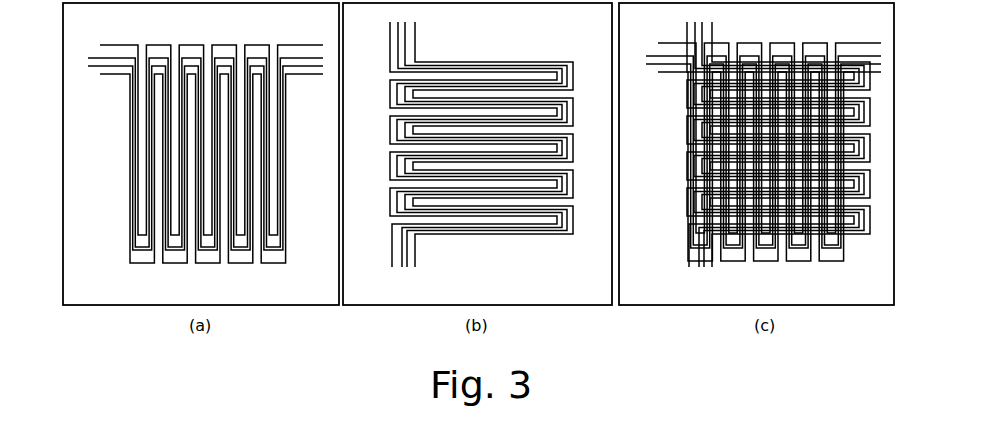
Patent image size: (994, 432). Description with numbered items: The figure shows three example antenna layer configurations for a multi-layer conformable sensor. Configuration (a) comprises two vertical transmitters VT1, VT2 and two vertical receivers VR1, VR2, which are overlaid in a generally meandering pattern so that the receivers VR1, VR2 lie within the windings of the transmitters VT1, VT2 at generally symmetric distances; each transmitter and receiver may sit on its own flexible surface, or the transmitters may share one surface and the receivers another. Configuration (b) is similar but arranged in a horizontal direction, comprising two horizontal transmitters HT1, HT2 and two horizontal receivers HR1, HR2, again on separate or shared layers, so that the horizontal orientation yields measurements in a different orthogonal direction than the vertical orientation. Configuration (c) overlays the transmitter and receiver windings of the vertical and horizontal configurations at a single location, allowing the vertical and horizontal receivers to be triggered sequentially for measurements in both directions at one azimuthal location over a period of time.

The vertical transmitter VT2 is at (478, 134).
The vertical receiver VR2 is at (473, 147).
The vertical receiver VR1 is at (473, 153).
The vertical transmitter VT1 is at (478, 164).
The horizontal transmitter HT1 is at (610, 150).
The horizontal receiver HR1 is at (618, 159).
The horizontal receiver HR2 is at (634, 159).
The horizontal transmitter HT2 is at (641, 150).